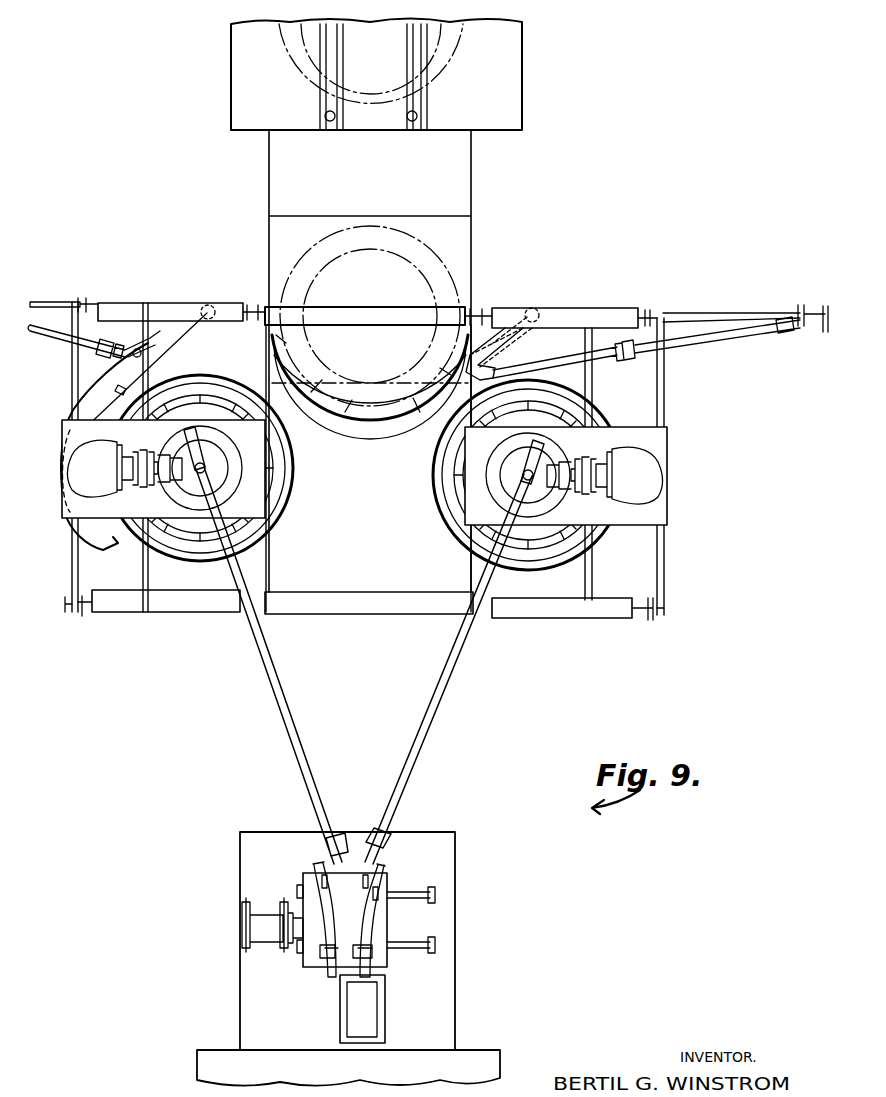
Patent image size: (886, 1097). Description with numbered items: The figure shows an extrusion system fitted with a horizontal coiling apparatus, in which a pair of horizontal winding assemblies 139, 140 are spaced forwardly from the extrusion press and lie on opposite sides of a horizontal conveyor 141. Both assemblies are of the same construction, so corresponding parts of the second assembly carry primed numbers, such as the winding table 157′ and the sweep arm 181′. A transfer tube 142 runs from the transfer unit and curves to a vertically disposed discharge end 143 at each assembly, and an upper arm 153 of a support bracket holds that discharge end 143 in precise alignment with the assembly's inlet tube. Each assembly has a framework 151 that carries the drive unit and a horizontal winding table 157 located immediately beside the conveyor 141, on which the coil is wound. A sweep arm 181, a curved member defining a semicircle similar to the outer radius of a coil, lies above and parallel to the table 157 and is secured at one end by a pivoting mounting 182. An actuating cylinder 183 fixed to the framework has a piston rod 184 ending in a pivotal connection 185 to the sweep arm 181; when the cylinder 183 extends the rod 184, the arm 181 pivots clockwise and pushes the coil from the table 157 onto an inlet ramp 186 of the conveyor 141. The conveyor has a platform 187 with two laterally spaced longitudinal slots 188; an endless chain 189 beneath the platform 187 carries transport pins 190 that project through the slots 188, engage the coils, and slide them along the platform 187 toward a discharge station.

The horizontal winding assembly 139 is at (561, 634).
The horizontal winding assembly 140 is at (187, 631).
The horizontal conveyor 141 is at (374, 620).
The transfer tube 142 is at (405, 770).
The discharge end 143 is at (206, 469).
The framework 151 is at (665, 612).
The upper arm 153 is at (198, 441).
The horizontal winding table 157 is at (568, 600).
The horizontal winding table 157′ is at (168, 578).
The sweep arm 181 is at (394, 422).
The sweep arm 181′ is at (92, 393).
The pivoting mounting 182 is at (534, 306).
The actuating cylinder 183 is at (708, 350).
The piston rod 184 is at (580, 358).
The pivotal connection 185 is at (494, 363).
The inlet ramp 186 is at (470, 262).
The conveyor top or platform 187 is at (233, 124).
The longitudinal slots 188 is at (330, 122).
The endless rotating chain 189 is at (410, 112).
The transport pins 190 is at (413, 122).